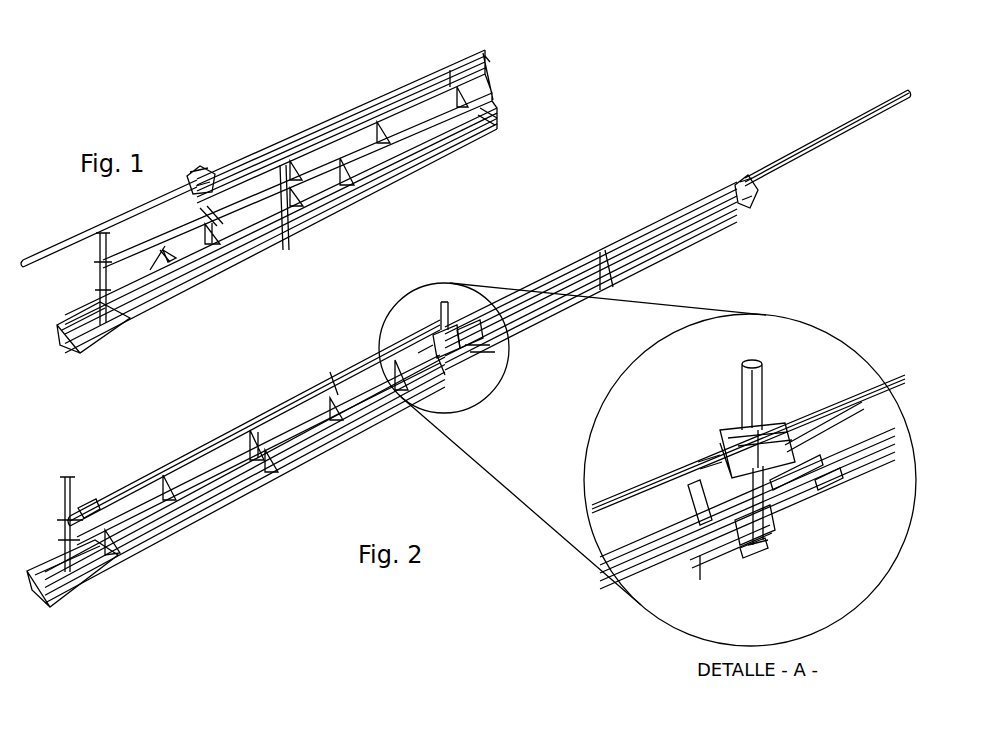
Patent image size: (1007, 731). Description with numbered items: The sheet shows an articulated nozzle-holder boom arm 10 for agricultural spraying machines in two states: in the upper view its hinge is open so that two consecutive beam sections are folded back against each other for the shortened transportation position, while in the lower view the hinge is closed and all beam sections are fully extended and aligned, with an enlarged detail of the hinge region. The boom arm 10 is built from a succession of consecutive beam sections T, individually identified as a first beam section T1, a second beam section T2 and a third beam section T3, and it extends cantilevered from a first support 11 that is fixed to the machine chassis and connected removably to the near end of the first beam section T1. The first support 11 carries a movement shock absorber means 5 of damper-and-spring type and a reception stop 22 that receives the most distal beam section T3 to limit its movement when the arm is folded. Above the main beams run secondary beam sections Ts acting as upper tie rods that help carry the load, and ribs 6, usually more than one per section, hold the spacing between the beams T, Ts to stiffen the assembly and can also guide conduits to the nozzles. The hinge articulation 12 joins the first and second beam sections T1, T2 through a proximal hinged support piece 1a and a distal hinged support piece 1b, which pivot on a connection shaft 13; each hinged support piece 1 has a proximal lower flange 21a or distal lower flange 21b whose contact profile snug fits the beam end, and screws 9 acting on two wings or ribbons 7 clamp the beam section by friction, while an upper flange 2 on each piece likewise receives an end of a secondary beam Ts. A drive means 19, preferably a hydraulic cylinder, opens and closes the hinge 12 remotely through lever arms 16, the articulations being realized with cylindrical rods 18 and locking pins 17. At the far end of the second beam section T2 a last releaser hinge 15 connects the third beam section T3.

In FIG. 1, the hinged support piece 1 is at (497, 77).
In FIG. 2, the proximal hinged support piece 1a is at (440, 388).
In FIG. 2, the distal hinged support piece 1b is at (485, 364).
In FIG. 2, the upper flange 2 is at (698, 455).
In FIG. 2, the movement shock absorber means 5 is at (90, 506).
In FIG. 1, the ribs 6 is at (283, 250).
In FIG. 2, the ribs 6 is at (255, 420).
In FIG. 2, the wings or ribbons 7 is at (805, 515).
In FIG. 2, the screws 9 is at (735, 565).
In FIG. 1, the articulated boom arm 10 is at (248, 125).
In FIG. 1, the first support 11 is at (110, 345).
In FIG. 2, the first support 11 is at (88, 597).
In FIG. 1, the hinge articulation 12 is at (487, 133).
In FIG. 2, the hinge articulation 12 is at (425, 330).
In FIG. 2, the connection shaft 13 is at (805, 510).
In FIG. 1, the last releaser hinge 15 is at (198, 174).
In FIG. 2, the last releaser hinge 15 is at (747, 180).
In FIG. 2, the lever arms 16 is at (723, 440).
In FIG. 2, the locking pins 17 is at (692, 505).
In FIG. 2, the cylindrical rods 18 is at (762, 546).
In FIG. 2, the drive means 19 is at (743, 388).
In FIG. 2, the proximal lower flange 21a is at (775, 565).
In FIG. 2, the distal lower flange 21b is at (828, 485).
In FIG. 2, the reception stop 22 is at (65, 500).
In FIG. 1, the beam sections T is at (370, 108).
In FIG. 1, the secondary beam sections Ts is at (170, 247).
In FIG. 2, the secondary beam sections Ts is at (143, 503).
In FIG. 2, the first beam section T1 is at (220, 503).
In FIG. 2, the second beam section T2 is at (673, 240).
In FIG. 2, the third beam section T3 is at (803, 160).